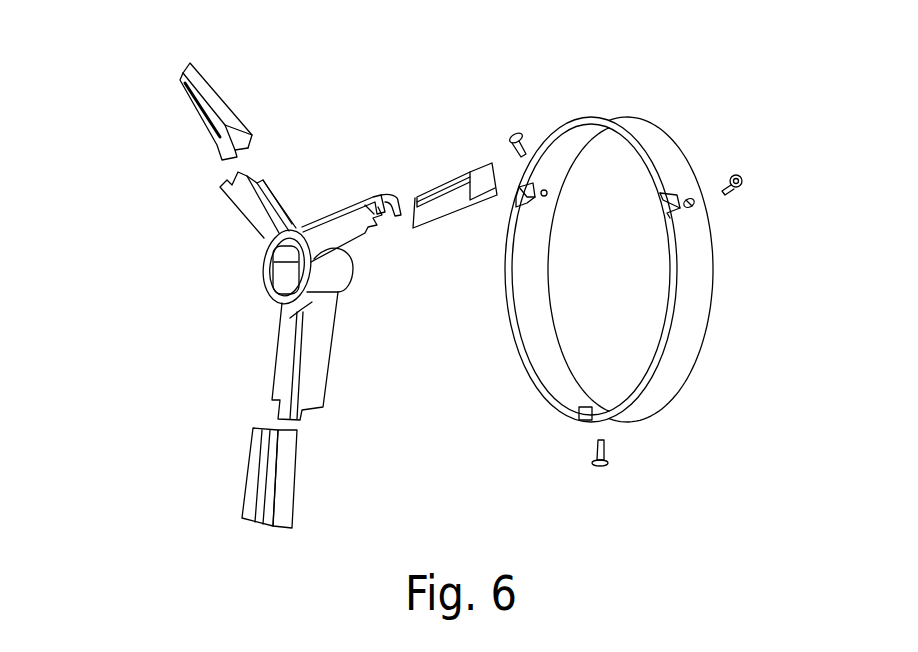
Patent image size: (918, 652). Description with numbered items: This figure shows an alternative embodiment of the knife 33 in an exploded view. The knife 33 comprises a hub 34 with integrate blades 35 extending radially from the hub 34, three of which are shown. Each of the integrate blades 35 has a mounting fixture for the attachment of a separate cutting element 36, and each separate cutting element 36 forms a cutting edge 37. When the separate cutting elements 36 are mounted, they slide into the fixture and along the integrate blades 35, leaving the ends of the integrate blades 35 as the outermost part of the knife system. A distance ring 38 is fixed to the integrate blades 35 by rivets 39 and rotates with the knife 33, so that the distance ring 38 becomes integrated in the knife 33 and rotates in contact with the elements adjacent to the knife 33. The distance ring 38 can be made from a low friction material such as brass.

The knife 33 is at (133, 64).
The hub 34 is at (263, 290).
The integrate blades 35 is at (245, 220).
The separate cutting elements 36 is at (195, 115).
The cutting edge 37 is at (213, 93).
The distance ring 38 is at (692, 143).
The rivets 39 is at (510, 128).